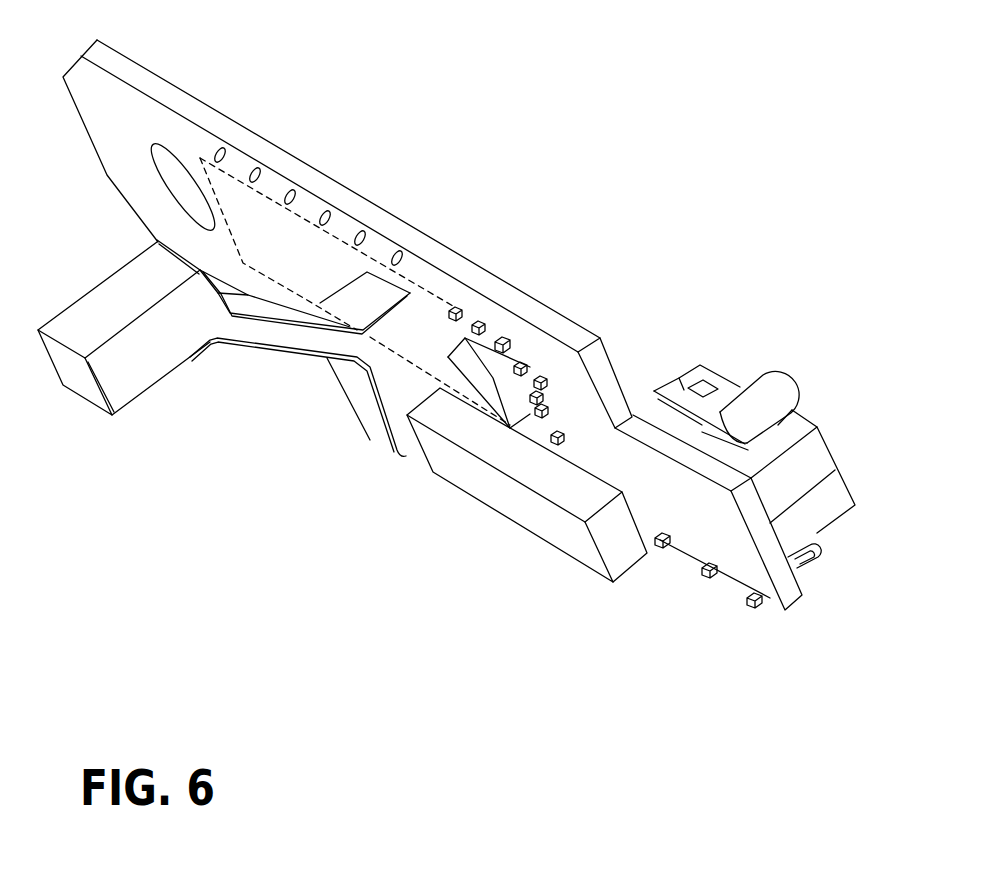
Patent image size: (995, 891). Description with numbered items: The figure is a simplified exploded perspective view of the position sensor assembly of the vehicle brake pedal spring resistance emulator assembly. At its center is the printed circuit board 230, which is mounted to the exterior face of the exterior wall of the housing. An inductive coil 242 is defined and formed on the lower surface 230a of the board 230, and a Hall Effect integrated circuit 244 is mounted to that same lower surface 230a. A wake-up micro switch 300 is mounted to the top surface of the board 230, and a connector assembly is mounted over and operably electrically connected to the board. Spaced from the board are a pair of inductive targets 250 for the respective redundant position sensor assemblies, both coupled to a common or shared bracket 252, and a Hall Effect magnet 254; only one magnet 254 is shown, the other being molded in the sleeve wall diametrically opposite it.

The printed circuit board 230 is at (427, 250).
The lower surface 230a is at (572, 363).
The inductive coil 242 is at (280, 215).
The Hall Effect integrated circuit 244 is at (480, 360).
The inductive target 250 is at (137, 365).
The bracket 252 is at (283, 335).
The Hall Effect magnet 254 is at (487, 485).
The wake-up micro switch 300 is at (728, 375).